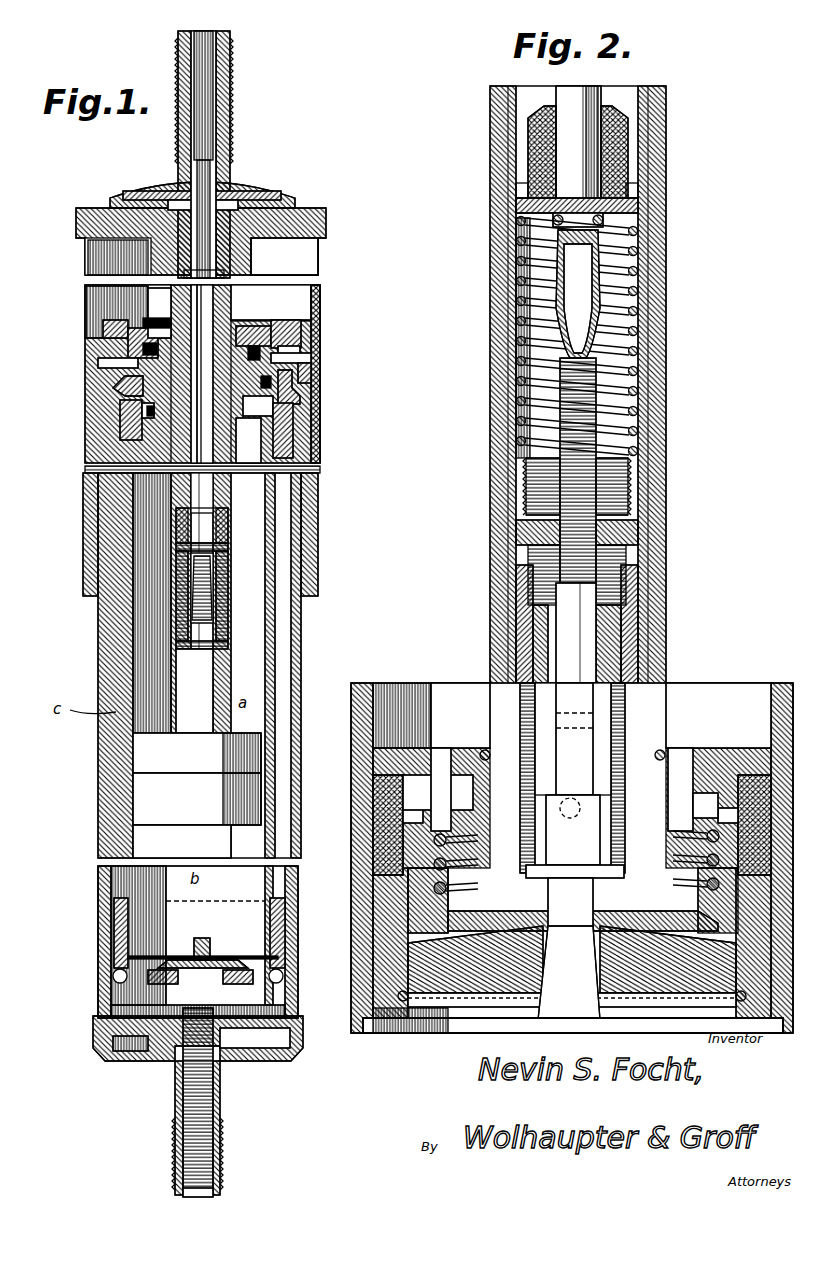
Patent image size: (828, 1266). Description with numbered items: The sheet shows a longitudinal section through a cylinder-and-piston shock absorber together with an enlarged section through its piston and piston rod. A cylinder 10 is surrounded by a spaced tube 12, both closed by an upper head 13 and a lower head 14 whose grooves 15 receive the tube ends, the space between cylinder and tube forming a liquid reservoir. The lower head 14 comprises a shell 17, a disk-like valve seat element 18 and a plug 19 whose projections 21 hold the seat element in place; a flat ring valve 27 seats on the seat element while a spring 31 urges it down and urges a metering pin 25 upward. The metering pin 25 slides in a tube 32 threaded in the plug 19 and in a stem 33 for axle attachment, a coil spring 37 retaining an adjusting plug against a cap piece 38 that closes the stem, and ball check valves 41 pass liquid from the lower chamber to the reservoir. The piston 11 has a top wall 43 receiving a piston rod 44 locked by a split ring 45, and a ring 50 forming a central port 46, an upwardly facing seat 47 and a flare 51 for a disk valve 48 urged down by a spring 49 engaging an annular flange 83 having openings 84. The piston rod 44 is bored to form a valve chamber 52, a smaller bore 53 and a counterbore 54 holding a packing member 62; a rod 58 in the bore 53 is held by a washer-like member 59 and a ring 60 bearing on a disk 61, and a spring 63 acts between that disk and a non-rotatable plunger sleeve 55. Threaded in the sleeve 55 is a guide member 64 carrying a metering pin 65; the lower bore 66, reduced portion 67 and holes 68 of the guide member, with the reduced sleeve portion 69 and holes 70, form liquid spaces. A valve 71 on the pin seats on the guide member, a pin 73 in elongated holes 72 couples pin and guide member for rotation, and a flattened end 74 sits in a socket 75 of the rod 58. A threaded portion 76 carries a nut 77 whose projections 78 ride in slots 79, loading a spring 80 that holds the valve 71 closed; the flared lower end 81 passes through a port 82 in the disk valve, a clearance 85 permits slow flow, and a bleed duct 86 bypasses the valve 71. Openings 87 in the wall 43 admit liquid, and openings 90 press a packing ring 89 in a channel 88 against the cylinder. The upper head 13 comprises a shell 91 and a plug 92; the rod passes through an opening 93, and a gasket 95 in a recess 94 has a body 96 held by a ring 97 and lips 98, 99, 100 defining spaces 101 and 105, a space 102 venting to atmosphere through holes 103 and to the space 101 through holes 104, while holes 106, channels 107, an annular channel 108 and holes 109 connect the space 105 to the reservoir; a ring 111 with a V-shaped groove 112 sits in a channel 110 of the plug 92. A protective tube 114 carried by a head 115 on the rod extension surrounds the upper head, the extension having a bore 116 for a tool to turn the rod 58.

In FIG. 1, the cylinder 10 is at (115, 610).
In FIG. 2, the cylinder 10 is at (372, 680).
In FIG. 1, the piston 11 is at (197, 815).
In FIG. 2, the piston 11 is at (430, 1025).
In FIG. 1, the tube 12 is at (293, 660).
In FIG. 1, the upper head 13 is at (306, 302).
In FIG. 1, the lower head 14 is at (90, 1050).
In FIG. 1, the annular grooves or channels 15 is at (92, 356).
In FIG. 1, the shell 17 is at (92, 907).
In FIG. 1, the valve seat element 18 is at (277, 975).
In FIG. 1, the plug 19 is at (238, 1033).
In FIG. 1, the projections 21 is at (150, 1012).
In FIG. 1, the metering pin 25 is at (190, 932).
In FIG. 1, the valve 27 is at (230, 960).
In FIG. 1, the expansion coil spring 31 is at (200, 950).
In FIG. 1, the tube 32 is at (180, 1082).
In FIG. 1, the stem 33 is at (212, 1097).
In FIG. 1, the second coil spring 37 is at (212, 1130).
In FIG. 1, the cap piece 38 is at (178, 1186).
In FIG. 1, the check valves 41 is at (105, 967).
In FIG. 2, the wall 43 is at (700, 742).
In FIG. 1, the piston rod 44 is at (222, 56).
In FIG. 2, the piston rod 44 is at (494, 345).
In FIG. 2, the split ring 45 is at (475, 742).
In FIG. 2, the central port 46 is at (572, 985).
In FIG. 2, the valve seat 47 is at (688, 923).
In FIG. 2, the disk valve 48 is at (485, 930).
In FIG. 2, the coil spring 49 is at (445, 845).
In FIG. 2, the ring 50 is at (362, 935).
In FIG. 2, the flared portion 51 is at (370, 880).
In FIG. 1, the valve chamber 52 is at (220, 566).
In FIG. 2, the valve chamber 52 is at (620, 272).
In FIG. 1, the axial bore 53 is at (205, 480).
In FIG. 2, the axial bore 53 is at (545, 92).
In FIG. 2, the counterbore 54 is at (620, 142).
In FIG. 1, the plunger sleeve 55 is at (194, 691).
In FIG. 2, the plunger sleeve 55 is at (630, 572).
In FIG. 1, the rod 58 is at (216, 275).
In FIG. 2, the rod 58 is at (600, 92).
In FIG. 1, the washer-like member 59 is at (243, 172).
In FIG. 1, the ring 60 is at (220, 539).
In FIG. 2, the ring 60 is at (632, 216).
In FIG. 2, the disk or washer 61 is at (510, 196).
In FIG. 1, the packing member 62 is at (212, 516).
In FIG. 2, the packing member 62 is at (520, 145).
In FIG. 1, the expansion coil spring 63 is at (208, 603).
In FIG. 2, the expansion coil spring 63 is at (600, 386).
In FIG. 2, the metering pin guide member 64 is at (605, 672).
In FIG. 1, the metering pin 65 is at (220, 634).
In FIG. 2, the metering pin 65 is at (562, 650).
In FIG. 2, the bore 66 is at (665, 800).
In FIG. 2, the reduced-diameter portion 67 is at (648, 742).
In FIG. 2, the transverse holes 68 is at (575, 836).
In FIG. 2, the reduced-diameter portion 69 is at (617, 700).
In FIG. 2, the transverse holes 70 is at (630, 708).
In FIG. 2, the valve 71 is at (570, 904).
In FIG. 2, the transverse holes 72 is at (535, 715).
In FIG. 2, the pin 73 is at (573, 738).
In FIG. 2, the flattened upper end portion 74 is at (622, 430).
In FIG. 2, the flattened socket 75 is at (572, 332).
In FIG. 2, the threaded portion 76 is at (520, 552).
In FIG. 2, the nut 77 is at (612, 510).
In FIG. 2, the projections 78 is at (510, 525).
In FIG. 2, the vertical slots 79 is at (512, 473).
In FIG. 2, the expansion coil spring 80 is at (600, 617).
In FIG. 2, the downwardly flared lower end portion 81 is at (569, 976).
In FIG. 2, the central port 82 is at (628, 923).
In FIG. 2, the annular flange 83 is at (668, 883).
In FIG. 2, the openings 84 is at (650, 923).
In FIG. 2, the clearance 85 is at (508, 608).
In FIG. 2, the bleed duct 86 is at (569, 938).
In FIG. 2, the openings 87 is at (430, 740).
In FIG. 2, the annular exterior channel 88 is at (365, 775).
In FIG. 1, the packing ring 89 is at (197, 753).
In FIG. 2, the packing ring 89 is at (395, 840).
In FIG. 2, the openings 90 is at (395, 805).
In FIG. 1, the shell 91 is at (120, 330).
In FIG. 1, the plug 92 is at (118, 400).
In FIG. 1, the central opening 93 is at (233, 318).
In FIG. 1, the recess 94 is at (135, 342).
In FIG. 1, the gasket 95 is at (275, 314).
In FIG. 1, the annular body portion 96 is at (252, 340).
In FIG. 1, the ring 97 is at (303, 362).
In FIG. 1, the lip 98 is at (140, 310).
In FIG. 1, the lip 99 is at (95, 316).
In FIG. 1, the lip 100 is at (303, 350).
In FIG. 1, the annular space 101 is at (168, 330).
In FIG. 1, the annular space 102 is at (273, 282).
In FIG. 1, the holes 103 is at (140, 316).
In FIG. 1, the holes 104 is at (100, 305).
In FIG. 1, the annular space 105 is at (292, 342).
In FIG. 1, the holes 106 is at (105, 380).
In FIG. 1, the grooves or channels 107 is at (265, 398).
In FIG. 1, the annular channel 108 is at (292, 380).
In FIG. 1, the holes 109 is at (263, 372).
In FIG. 1, the annular channel 110 is at (285, 418).
In FIG. 1, the ring 111 is at (134, 408).
In FIG. 1, the V-shaped groove 112 is at (251, 442).
In FIG. 1, the tube 114 is at (75, 497).
In FIG. 1, the head 115 is at (285, 197).
In FIG. 1, the axial bore 116 is at (200, 110).